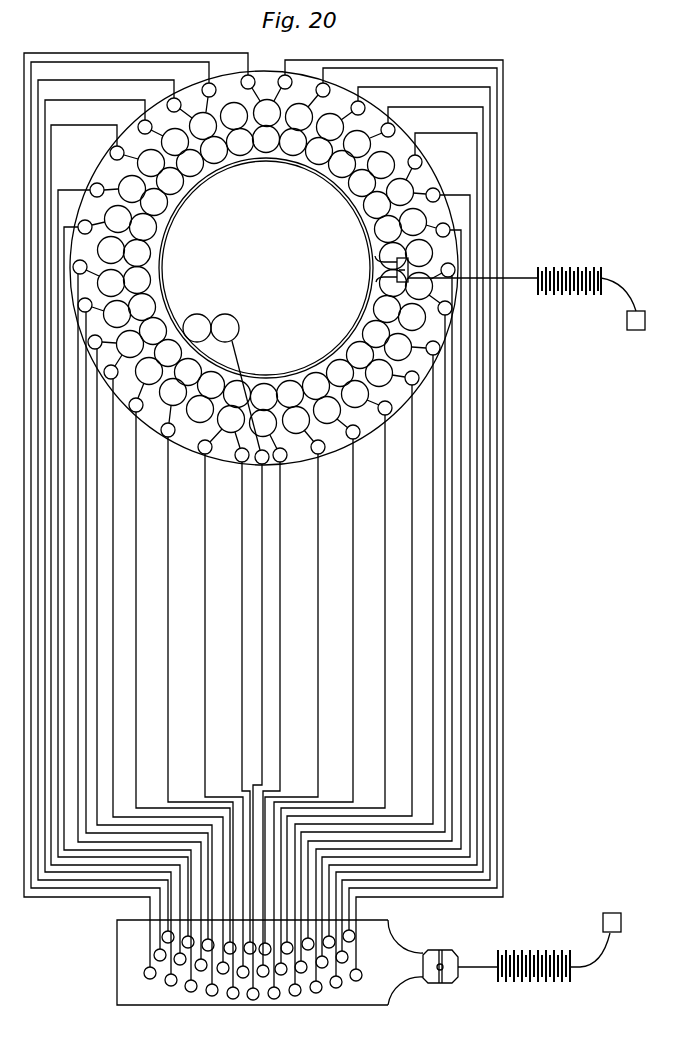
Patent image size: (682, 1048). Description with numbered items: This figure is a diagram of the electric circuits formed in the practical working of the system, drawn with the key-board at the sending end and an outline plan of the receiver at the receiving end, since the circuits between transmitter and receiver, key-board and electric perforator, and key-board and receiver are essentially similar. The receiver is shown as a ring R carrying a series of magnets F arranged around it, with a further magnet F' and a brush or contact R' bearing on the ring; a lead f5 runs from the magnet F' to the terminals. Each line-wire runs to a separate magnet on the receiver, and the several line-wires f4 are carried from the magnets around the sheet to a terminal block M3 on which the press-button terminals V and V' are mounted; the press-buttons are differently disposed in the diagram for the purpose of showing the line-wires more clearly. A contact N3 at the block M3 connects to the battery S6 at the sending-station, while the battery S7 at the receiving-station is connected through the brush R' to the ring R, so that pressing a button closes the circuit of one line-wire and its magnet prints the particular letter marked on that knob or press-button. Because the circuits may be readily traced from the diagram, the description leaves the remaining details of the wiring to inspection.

The ring armature R is at (266, 268).
The brush on ring R' is at (398, 262).
The field coils F is at (264, 269).
The auxiliary field coil F' is at (211, 317).
The lead from auxiliary coil f5 is at (246, 395).
The conductors from coils to terminals f4 is at (263, 520).
The terminal block M3 is at (270, 962).
The terminals V is at (247, 954).
The terminals lower row V' is at (253, 998).
The contact brush N3 is at (460, 977).
The battery at the sending-station S6 is at (551, 957).
The battery at the receiving-station S7 is at (526, 287).